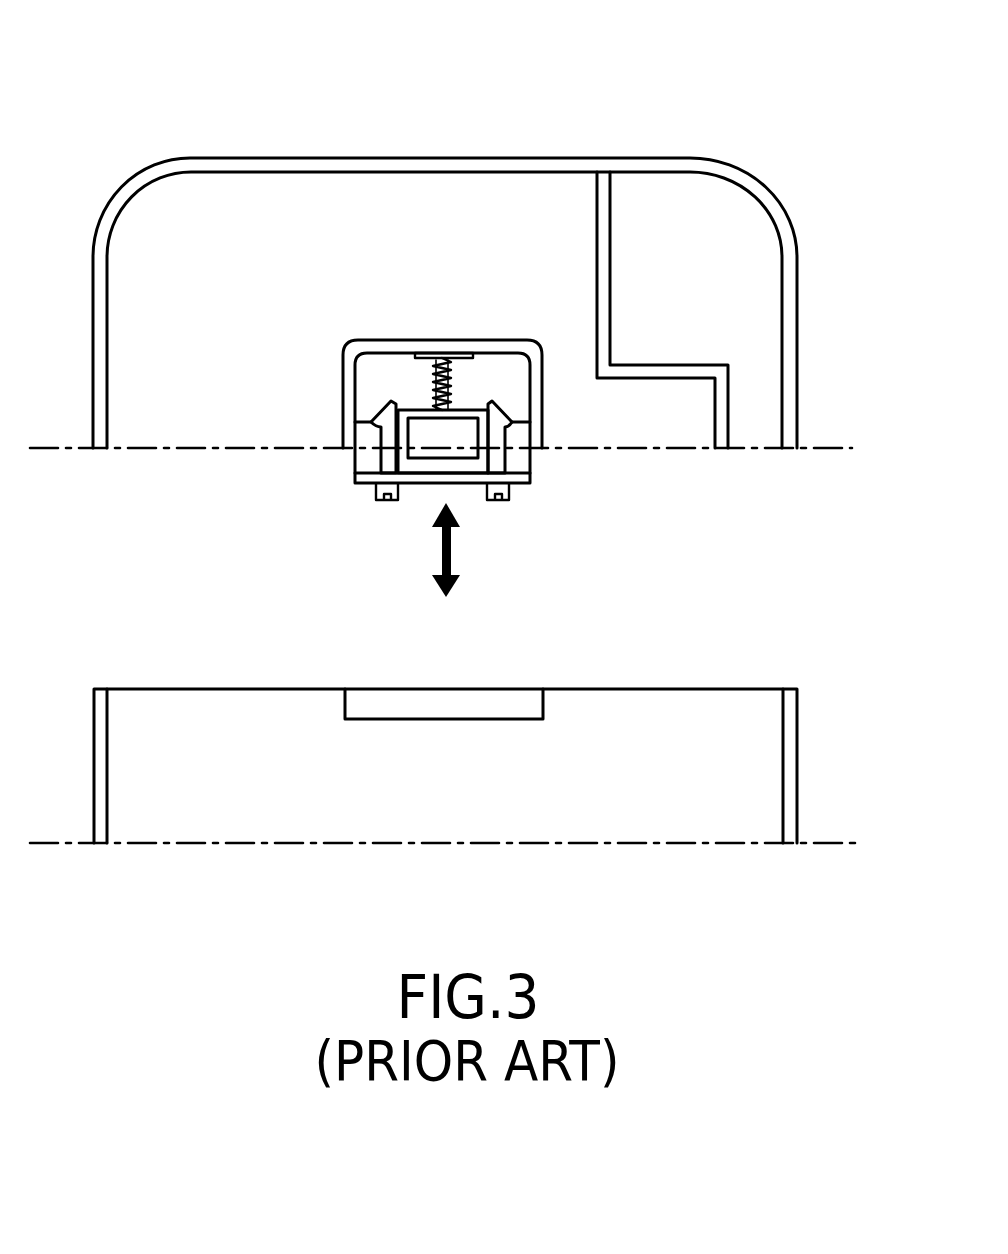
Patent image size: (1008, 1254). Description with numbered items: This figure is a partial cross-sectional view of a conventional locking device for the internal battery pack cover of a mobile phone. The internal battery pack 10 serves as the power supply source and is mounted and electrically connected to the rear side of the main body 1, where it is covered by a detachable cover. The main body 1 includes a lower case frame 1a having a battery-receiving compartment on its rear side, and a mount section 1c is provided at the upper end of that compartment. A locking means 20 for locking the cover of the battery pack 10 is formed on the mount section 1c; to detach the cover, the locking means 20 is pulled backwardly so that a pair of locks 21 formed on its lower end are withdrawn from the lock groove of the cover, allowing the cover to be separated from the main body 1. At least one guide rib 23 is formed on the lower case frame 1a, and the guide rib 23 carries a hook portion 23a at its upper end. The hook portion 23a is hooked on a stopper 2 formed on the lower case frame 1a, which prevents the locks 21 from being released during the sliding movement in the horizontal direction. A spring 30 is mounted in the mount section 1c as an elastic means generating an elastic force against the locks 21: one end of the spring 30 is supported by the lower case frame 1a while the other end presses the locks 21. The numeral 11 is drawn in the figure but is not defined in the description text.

The main body 1 is at (818, 332).
The lower case frame 1a is at (606, 172).
The mount section 1c is at (393, 372).
The stopper 2 is at (518, 423).
The internal battery pack 10 is at (818, 766).
The recess 11 is at (455, 705).
The locking means 20 is at (356, 485).
The locks 21 is at (388, 500).
The guide rib 23 is at (362, 452).
The hook portion 23a is at (508, 418).
The spring 30 is at (453, 373).